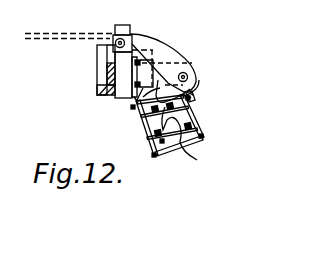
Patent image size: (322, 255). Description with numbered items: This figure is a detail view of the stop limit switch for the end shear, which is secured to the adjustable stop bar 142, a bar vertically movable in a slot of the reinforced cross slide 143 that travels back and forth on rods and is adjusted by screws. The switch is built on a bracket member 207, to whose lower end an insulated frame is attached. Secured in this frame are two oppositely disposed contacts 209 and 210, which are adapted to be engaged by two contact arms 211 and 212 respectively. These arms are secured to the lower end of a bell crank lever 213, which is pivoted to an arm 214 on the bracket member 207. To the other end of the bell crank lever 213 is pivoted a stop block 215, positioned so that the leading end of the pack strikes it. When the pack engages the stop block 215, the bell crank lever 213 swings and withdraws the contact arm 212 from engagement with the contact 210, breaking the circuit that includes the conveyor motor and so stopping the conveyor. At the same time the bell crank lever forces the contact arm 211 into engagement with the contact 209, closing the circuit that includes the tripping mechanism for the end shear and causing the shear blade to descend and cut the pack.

The stop bar 142 is at (111, 73).
The cross slide 143 is at (98, 51).
The bracket member 207 is at (131, 102).
The contact 209 is at (150, 139).
The contact 210 is at (190, 127).
The contact arm 211 is at (190, 152).
The contact arm 212 is at (196, 113).
The bell crank lever 213 is at (199, 80).
The arm 214 is at (157, 73).
The stop block 215 is at (117, 38).